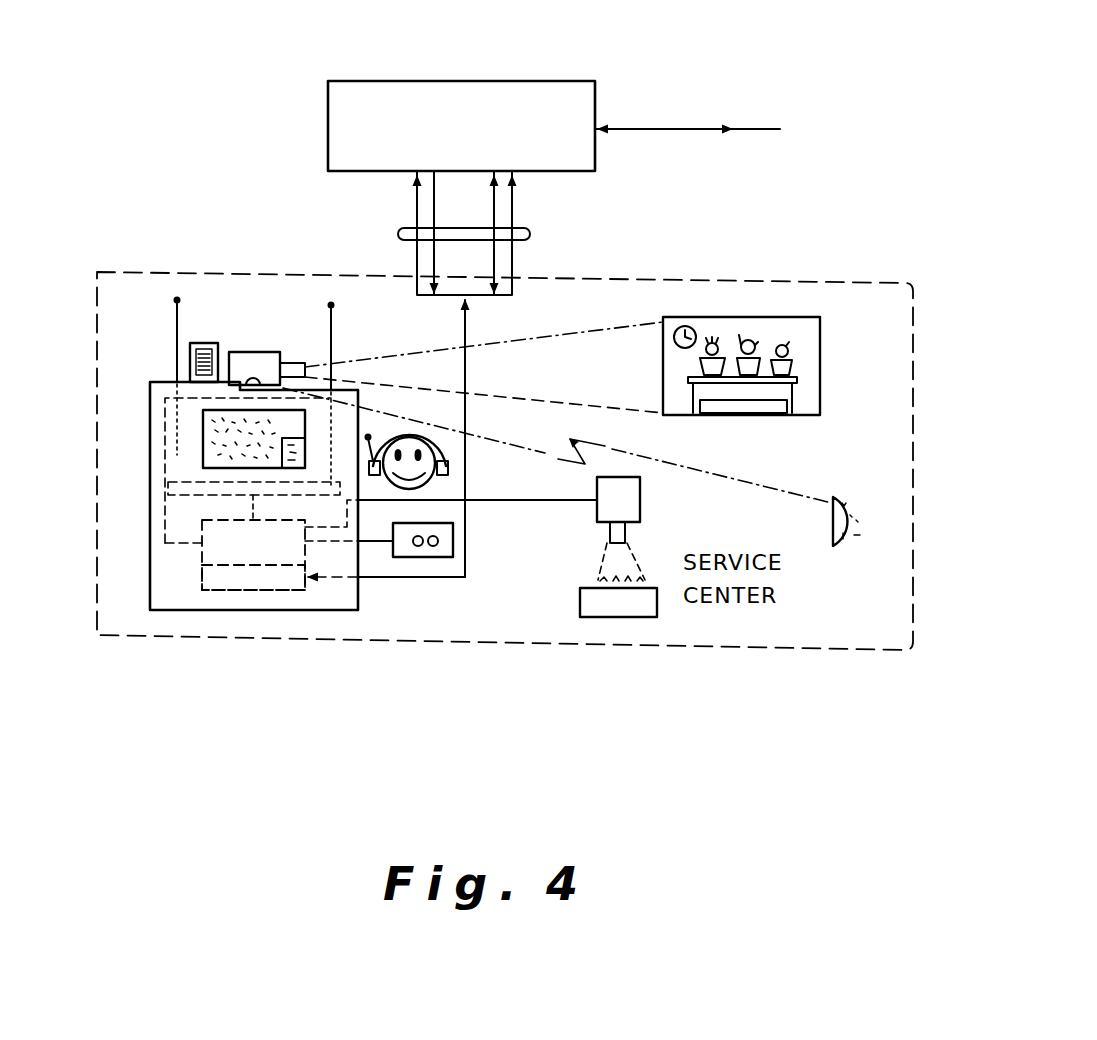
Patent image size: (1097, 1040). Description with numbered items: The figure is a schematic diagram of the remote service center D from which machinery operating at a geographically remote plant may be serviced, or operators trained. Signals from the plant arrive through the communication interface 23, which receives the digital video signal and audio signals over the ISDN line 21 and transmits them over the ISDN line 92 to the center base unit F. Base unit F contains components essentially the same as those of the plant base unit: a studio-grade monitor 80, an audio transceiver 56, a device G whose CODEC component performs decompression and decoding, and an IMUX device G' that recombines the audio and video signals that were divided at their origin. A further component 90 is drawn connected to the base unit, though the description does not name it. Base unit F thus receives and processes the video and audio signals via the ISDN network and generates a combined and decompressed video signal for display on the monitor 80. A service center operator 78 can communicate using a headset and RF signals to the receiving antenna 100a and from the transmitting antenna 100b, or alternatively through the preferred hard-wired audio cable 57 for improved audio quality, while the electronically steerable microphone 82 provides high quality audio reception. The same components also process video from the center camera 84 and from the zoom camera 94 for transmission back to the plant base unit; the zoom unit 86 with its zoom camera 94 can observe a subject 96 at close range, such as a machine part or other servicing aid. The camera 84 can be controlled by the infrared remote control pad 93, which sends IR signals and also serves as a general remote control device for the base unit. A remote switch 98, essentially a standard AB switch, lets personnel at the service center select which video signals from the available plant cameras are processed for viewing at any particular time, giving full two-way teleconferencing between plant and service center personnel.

The communication interface 23 is at (380, 80).
The ISDN line 21 is at (660, 128).
The ISDN line 92 is at (539, 229).
The receiving antenna 100a is at (175, 338).
The transmitting antenna 100b is at (333, 353).
The electronically steerable microphone 82 is at (210, 340).
The center camera 84 is at (270, 353).
The monitor 80 is at (202, 430).
The audio transceiver 56 is at (163, 487).
The audio cable 57 is at (362, 488).
The service center operator 78 is at (428, 440).
The interface unit 90 is at (420, 559).
The zoom camera 94 is at (596, 520).
The subject 96 is at (637, 573).
The zoom unit 86 is at (582, 562).
The remote switch 98 is at (775, 311).
The infrared remote control pad 93 is at (842, 550).
The infrared IR is at (758, 483).
The base unit F is at (138, 548).
The CODEC device G is at (187, 602).
The IMUX device G' is at (247, 635).
The remote service center D is at (195, 640).